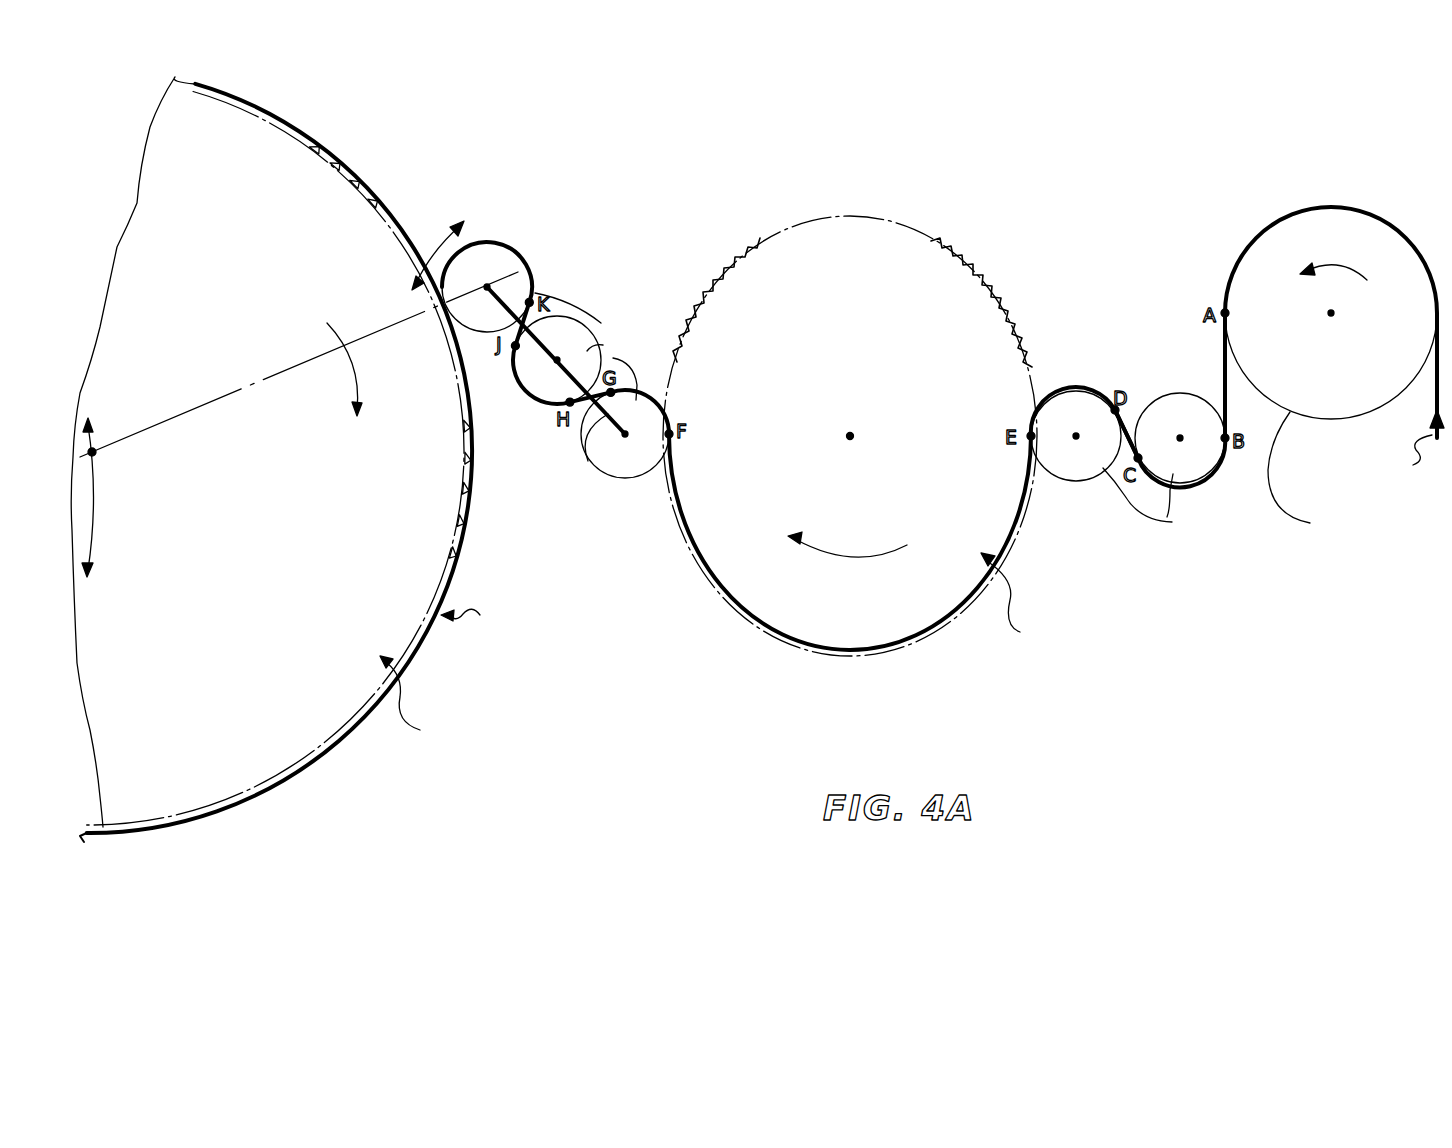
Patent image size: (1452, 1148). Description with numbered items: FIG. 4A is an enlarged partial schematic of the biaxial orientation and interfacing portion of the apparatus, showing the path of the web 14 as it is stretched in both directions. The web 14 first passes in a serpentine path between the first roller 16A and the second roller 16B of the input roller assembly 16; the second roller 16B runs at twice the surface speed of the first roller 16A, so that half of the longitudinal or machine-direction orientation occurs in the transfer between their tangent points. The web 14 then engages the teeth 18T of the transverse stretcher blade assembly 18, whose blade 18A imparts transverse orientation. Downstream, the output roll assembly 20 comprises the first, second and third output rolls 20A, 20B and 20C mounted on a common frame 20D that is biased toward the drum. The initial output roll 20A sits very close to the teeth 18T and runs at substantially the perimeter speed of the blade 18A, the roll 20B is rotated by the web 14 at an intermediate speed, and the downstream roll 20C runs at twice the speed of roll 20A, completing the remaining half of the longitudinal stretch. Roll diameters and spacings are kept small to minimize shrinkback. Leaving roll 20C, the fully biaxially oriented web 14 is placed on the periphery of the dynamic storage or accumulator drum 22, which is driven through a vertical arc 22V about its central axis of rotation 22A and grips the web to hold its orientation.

The dynamic storage or accumulator drum 22 is at (200, 352).
The central axis of rotation 22A is at (95, 455).
The vertical arc 22V is at (93, 523).
The output roll assembly 20 is at (553, 183).
The first output roll 20A is at (645, 465).
The second output roll 20B is at (572, 345).
The third output roll 20C is at (498, 280).
The common frame 20D is at (598, 447).
The transverse stretcher blade assembly 18 is at (946, 216).
The blade 18A is at (935, 394).
The teeth 18T is at (989, 300).
The input roller assembly 16 is at (1210, 373).
The first roller 16A is at (1197, 430).
The second roller 16B is at (1097, 473).
The web 14 is at (888, 652).
The cooling roll CR is at (1346, 384).